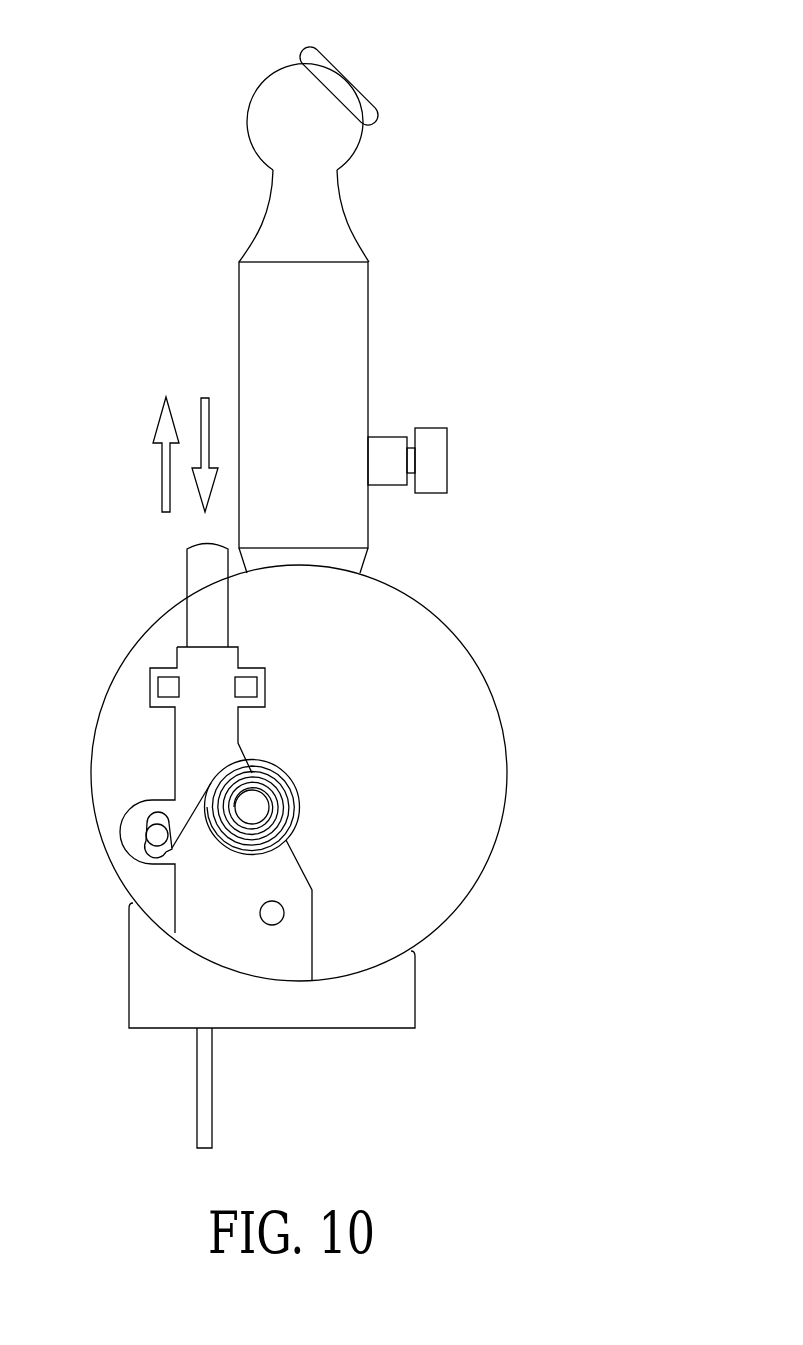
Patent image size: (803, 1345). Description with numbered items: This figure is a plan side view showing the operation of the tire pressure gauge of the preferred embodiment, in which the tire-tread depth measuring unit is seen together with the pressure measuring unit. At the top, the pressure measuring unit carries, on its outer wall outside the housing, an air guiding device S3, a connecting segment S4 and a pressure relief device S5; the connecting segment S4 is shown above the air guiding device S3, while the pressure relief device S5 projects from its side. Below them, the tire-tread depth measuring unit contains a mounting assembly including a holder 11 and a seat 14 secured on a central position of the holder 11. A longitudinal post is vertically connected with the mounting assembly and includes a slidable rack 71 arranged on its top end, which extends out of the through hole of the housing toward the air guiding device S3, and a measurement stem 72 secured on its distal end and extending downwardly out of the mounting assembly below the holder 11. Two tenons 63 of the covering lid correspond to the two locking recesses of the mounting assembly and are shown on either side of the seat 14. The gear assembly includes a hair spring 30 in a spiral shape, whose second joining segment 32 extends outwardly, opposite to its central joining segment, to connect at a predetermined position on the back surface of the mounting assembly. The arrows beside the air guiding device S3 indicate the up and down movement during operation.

The air guiding device S3 is at (283, 333).
The connecting segment S4 is at (345, 77).
The pressure relief device S5 is at (428, 450).
The slidable rack 71 is at (212, 590).
The tenons 63 is at (172, 688).
The seat 14 is at (220, 732).
The second joining segment 32 is at (147, 822).
The hair spring 30 is at (220, 838).
The holder 11 is at (172, 977).
The measurement stem 72 is at (200, 1100).